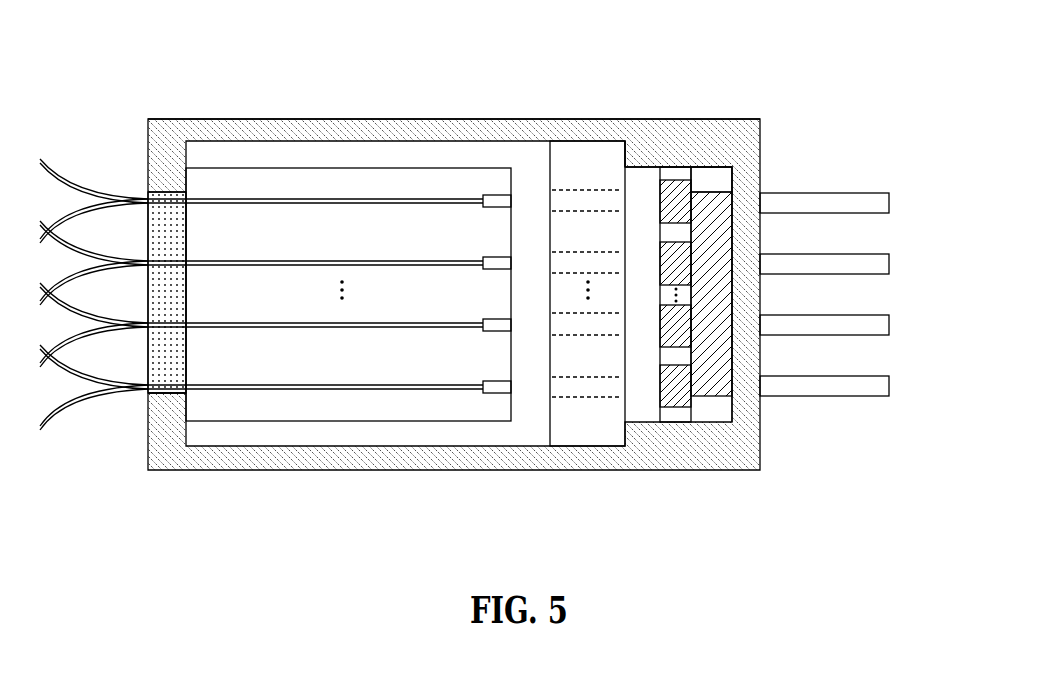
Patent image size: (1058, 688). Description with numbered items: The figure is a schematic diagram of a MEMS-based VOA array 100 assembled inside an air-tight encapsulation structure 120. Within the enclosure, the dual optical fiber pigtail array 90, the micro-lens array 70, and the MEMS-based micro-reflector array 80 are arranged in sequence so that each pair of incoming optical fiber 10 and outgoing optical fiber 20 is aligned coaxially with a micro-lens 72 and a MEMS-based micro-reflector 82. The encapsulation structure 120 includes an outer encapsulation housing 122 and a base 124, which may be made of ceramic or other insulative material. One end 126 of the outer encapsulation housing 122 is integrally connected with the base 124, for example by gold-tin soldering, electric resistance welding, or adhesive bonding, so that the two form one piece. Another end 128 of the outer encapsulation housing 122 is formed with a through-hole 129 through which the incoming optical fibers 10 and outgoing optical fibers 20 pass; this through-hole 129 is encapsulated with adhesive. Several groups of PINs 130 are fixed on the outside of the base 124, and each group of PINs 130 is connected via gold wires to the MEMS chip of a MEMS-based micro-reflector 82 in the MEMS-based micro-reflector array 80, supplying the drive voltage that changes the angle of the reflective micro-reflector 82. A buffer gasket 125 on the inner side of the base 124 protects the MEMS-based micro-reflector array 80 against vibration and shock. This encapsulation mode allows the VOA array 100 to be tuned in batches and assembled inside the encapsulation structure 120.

The MEMS-based VOA array 100 is at (303, 38).
The incoming optical fiber 10 is at (100, 193).
The outgoing optical fiber 20 is at (85, 398).
The encapsulation structure 120 is at (766, 434).
The outer encapsulation housing 122 is at (398, 128).
The base 124 is at (647, 152).
The buffer gasket 125 is at (713, 188).
The one end of the outer encapsulation housing 126 is at (620, 138).
The another end of the outer encapsulation housing 128 is at (162, 141).
The through-hole 129 is at (168, 368).
The PINs 130 is at (808, 193).
The dual optical fiber pigtail array 90 is at (445, 405).
The micro-lens array 70 is at (573, 433).
The micro-lens 72 is at (575, 388).
The MEMS-based micro-reflector 82 is at (675, 402).
The MEMS-based micro-reflector array 80 is at (684, 417).